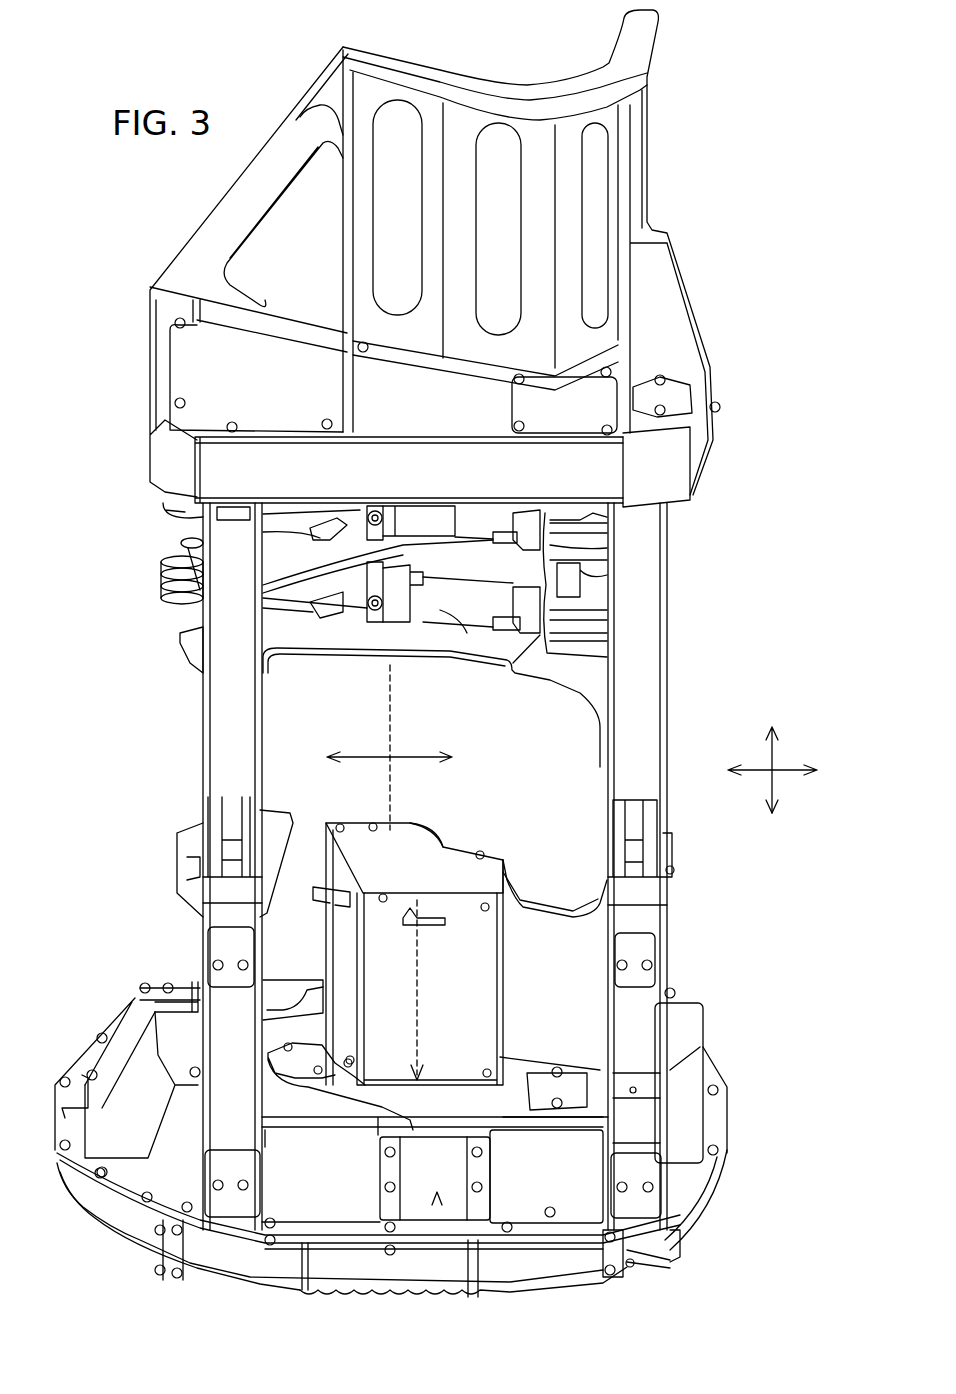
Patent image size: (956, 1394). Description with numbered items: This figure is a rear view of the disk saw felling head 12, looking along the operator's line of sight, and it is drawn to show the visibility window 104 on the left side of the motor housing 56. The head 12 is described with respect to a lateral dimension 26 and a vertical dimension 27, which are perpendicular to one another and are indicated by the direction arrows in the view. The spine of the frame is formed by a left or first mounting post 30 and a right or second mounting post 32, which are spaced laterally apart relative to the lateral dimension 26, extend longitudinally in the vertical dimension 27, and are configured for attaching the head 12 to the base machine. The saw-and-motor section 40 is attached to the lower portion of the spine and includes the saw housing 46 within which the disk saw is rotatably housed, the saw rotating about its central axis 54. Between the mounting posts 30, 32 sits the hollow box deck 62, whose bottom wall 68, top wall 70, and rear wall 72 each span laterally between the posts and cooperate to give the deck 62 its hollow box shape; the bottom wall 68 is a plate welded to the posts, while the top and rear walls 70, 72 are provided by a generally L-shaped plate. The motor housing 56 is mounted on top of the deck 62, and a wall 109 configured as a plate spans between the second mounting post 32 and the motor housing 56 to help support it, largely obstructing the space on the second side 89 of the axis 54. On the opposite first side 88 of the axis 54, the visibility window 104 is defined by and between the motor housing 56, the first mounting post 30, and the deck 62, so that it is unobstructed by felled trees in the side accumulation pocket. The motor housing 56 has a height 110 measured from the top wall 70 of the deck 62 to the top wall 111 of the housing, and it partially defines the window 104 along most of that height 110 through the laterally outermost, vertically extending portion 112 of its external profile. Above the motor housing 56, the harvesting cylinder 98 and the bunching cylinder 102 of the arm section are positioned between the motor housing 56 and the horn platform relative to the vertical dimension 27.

The head 12 is at (125, 424).
The lateral dimension 26 is at (790, 770).
The vertical dimension 27 is at (787, 787).
The first mounting post 30 is at (203, 742).
The second mounting post 32 is at (610, 810).
The saw-and-motor section 40 is at (120, 1030).
The saw housing 46 is at (117, 1217).
The central axis 54 is at (390, 687).
The motor housing 56 is at (437, 965).
The hollow box deck 62 is at (450, 1200).
The bottom wall 68 is at (437, 1195).
The top wall 70 is at (443, 1110).
The rear wall 72 is at (510, 1252).
The first side 88 is at (372, 765).
The second side 89 is at (398, 757).
The harvesting cylinder 98 is at (465, 633).
The bunching cylinder 102 is at (448, 522).
The visibility window 104 is at (323, 927).
The wall 109 is at (548, 943).
The height 110 is at (443, 990).
The top wall 111 is at (438, 826).
The portion 112 is at (323, 980).